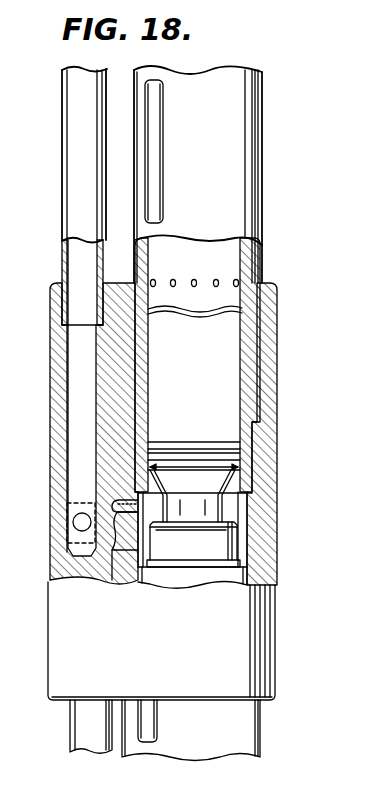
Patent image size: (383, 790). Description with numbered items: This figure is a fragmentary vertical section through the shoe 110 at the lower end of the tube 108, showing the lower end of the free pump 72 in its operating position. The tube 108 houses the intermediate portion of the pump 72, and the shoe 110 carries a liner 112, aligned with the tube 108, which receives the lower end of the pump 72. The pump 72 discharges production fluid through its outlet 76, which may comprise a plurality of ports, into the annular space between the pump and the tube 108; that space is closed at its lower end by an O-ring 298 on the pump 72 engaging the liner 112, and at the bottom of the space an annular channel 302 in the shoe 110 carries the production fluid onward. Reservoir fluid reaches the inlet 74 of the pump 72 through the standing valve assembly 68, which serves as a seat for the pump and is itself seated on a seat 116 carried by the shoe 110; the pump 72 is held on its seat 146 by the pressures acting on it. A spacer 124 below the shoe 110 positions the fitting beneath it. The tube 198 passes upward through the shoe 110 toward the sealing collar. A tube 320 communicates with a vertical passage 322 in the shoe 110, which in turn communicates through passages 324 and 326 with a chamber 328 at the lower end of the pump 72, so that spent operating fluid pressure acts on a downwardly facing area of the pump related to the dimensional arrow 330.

The tube 320 is at (62, 141).
The vertical passage 322 is at (68, 402).
The passage 324 is at (76, 528).
The passage 326 is at (120, 565).
The chamber 328 is at (247, 500).
The dimensional arrow 330 is at (181, 477).
The tube 198 is at (160, 177).
The tube 108 is at (253, 203).
The pump 72 is at (224, 258).
The outlet 76 is at (222, 283).
The annular channel 302 is at (250, 417).
The shoe 110 is at (272, 428).
The O-ring 298 is at (240, 447).
The liner 112 is at (240, 465).
The inlet 74 is at (205, 519).
The seat 146 is at (229, 531).
The standing valve assembly 68 is at (220, 550).
The seat 116 is at (247, 580).
The spacer 124 is at (256, 735).